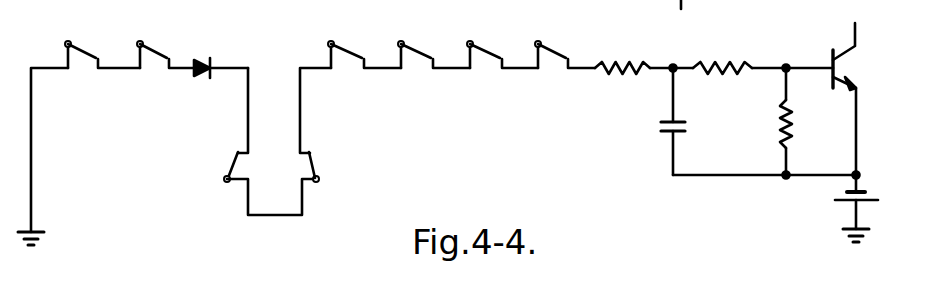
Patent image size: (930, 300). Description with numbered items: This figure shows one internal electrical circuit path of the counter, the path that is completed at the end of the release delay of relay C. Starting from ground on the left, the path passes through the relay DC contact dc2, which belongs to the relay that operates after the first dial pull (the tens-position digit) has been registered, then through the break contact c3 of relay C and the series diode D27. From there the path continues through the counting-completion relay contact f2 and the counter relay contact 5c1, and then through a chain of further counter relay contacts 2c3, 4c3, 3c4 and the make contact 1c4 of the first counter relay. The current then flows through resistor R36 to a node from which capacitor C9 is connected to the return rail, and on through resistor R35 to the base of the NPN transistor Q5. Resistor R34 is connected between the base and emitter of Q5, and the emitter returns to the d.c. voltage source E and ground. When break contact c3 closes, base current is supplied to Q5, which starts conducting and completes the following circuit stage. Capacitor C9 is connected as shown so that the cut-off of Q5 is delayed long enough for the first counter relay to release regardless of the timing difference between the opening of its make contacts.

The relay DC contact dc2 is at (102, 46).
The relay C break contact c3 is at (165, 46).
The diode D27 is at (219, 56).
The relay F contact f2 is at (256, 175).
The counter relay 5C contact 5c1 is at (331, 125).
The counter relay 2C contact 2c3 is at (364, 41).
The counter relay 4C contact 4c3 is at (434, 41).
The counter relay 3C contact 3c4 is at (502, 41).
The counter relay 1C make contact 1c4 is at (565, 41).
The resistor R36 is at (644, 54).
The resistor R35 is at (763, 54).
The capacitor C9 is at (690, 121).
The resistor R34 is at (810, 121).
The NPN transistor Q5 is at (861, 99).
The d.c. voltage source E is at (865, 208).